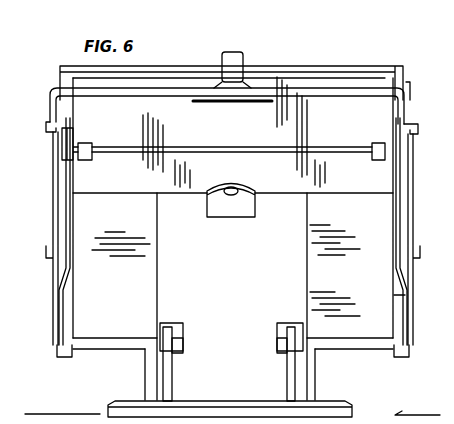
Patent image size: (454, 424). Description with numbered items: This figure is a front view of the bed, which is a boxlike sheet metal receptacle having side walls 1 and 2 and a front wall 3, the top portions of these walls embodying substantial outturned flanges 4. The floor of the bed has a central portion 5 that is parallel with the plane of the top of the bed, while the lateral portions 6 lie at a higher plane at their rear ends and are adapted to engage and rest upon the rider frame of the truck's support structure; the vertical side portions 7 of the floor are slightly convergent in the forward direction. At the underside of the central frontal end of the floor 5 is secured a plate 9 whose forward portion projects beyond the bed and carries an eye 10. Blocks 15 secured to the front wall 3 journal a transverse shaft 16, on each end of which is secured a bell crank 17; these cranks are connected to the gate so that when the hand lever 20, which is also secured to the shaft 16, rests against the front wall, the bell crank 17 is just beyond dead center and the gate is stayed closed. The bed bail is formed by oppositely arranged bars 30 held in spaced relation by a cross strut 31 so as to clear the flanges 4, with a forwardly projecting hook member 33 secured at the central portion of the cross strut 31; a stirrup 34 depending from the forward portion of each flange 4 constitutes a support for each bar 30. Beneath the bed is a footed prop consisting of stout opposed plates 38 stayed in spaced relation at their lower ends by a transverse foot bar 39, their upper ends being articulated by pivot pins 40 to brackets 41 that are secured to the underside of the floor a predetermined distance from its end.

The side wall 1 is at (392, 225).
The side wall 2 is at (74, 241).
The front wall 3 is at (141, 190).
The outturned flange 4 is at (68, 292).
The central portion of the floor 5 is at (172, 283).
The lateral portion of the floor 6 is at (112, 340).
The vertical side portion of the floor 7 is at (158, 235).
The plate 9 is at (207, 206).
The eye 10 is at (240, 188).
The block 15 is at (93, 151).
The transverse shaft 16 is at (204, 154).
The bell crank 17 is at (72, 134).
The hand lever 20 is at (397, 66).
The bar 30 is at (50, 186).
The cross strut 31 is at (321, 97).
The hook member 33 is at (243, 58).
The stirrup 34 is at (416, 133).
The plate 38 is at (172, 379).
The transverse foot bar 39 is at (228, 413).
The pivot pin 40 is at (179, 350).
The bracket 41 is at (184, 334).